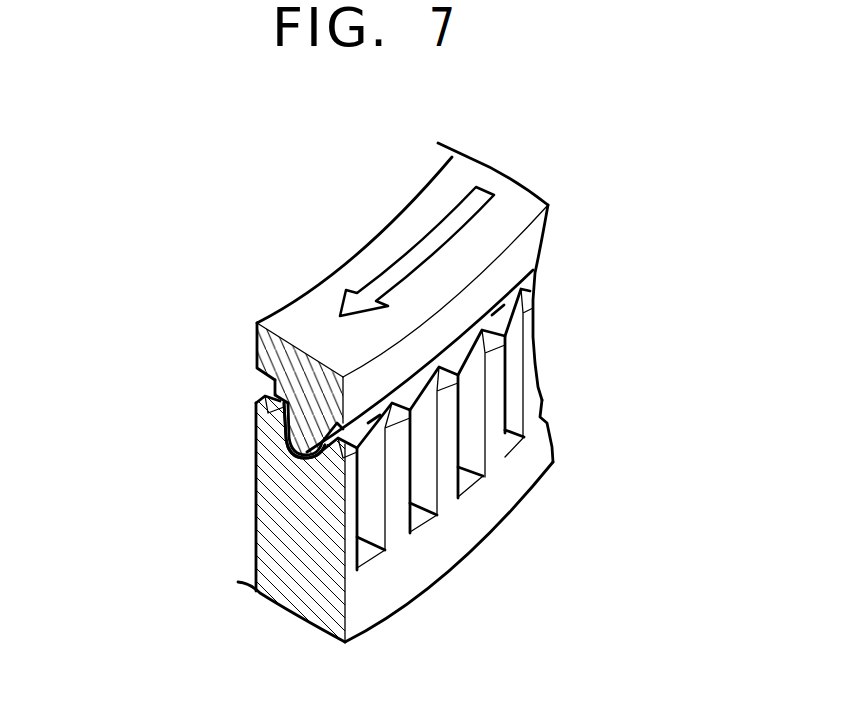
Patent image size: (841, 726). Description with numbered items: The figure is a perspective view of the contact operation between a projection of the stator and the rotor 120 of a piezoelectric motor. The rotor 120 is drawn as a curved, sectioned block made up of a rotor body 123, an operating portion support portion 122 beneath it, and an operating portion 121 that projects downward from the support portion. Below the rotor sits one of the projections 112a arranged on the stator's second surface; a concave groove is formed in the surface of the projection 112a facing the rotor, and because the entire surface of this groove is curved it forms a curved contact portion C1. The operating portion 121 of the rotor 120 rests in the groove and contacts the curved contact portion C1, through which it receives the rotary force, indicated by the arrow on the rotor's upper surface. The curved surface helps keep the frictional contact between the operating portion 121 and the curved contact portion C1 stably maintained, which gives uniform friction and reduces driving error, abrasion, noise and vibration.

The rotor 120 is at (302, 299).
The rotor body 123 is at (263, 349).
The operating portion support portion 122 is at (283, 391).
The operating portion 121 is at (290, 429).
The curved contact portion C1 is at (283, 433).
The projections 112a is at (287, 522).